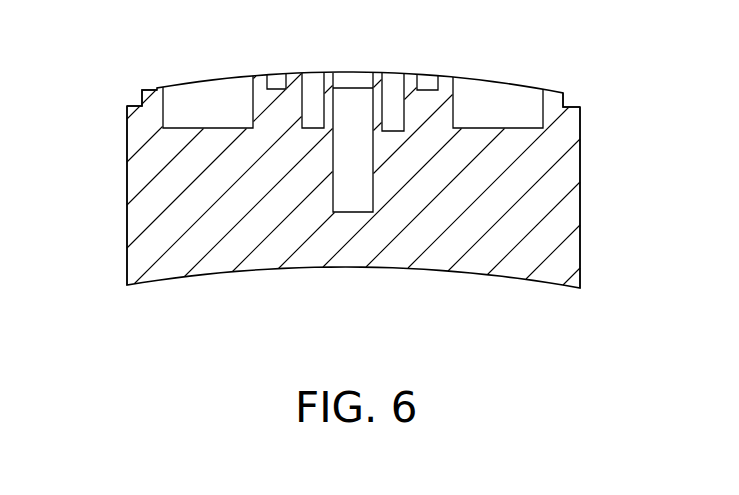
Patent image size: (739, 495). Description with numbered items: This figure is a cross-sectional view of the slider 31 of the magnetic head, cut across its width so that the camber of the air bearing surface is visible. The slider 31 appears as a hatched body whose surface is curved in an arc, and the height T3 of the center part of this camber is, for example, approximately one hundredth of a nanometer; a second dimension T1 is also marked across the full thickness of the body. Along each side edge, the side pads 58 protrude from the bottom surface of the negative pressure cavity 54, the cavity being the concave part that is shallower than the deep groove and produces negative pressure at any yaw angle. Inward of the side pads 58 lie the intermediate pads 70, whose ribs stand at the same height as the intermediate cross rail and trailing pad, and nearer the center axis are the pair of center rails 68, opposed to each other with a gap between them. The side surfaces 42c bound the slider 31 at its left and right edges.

The slider 31 is at (378, 254).
The side surface 42c is at (127, 245).
The negative pressure cavity 54 is at (210, 93).
The side pads 58 is at (155, 103).
The center rails 68 is at (317, 100).
The intermediate pads 70 is at (255, 68).
The thickness T1 is at (270, 72).
The height of the center part of the camber T3 is at (92, 117).